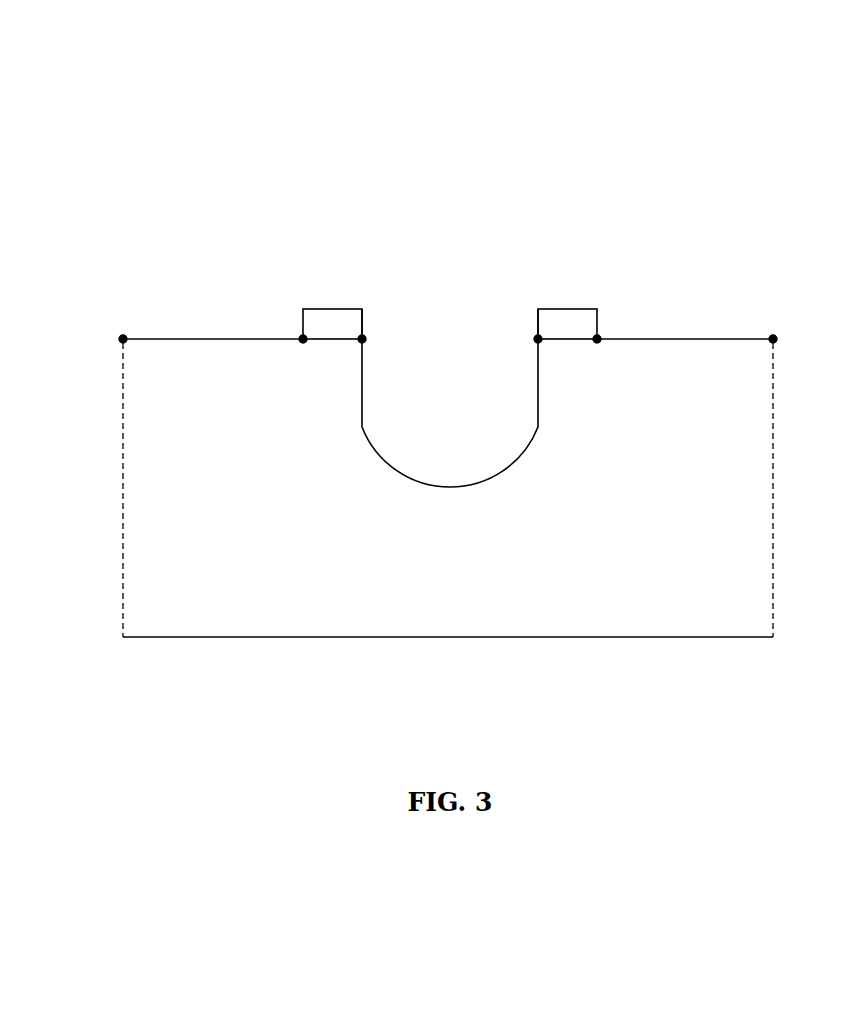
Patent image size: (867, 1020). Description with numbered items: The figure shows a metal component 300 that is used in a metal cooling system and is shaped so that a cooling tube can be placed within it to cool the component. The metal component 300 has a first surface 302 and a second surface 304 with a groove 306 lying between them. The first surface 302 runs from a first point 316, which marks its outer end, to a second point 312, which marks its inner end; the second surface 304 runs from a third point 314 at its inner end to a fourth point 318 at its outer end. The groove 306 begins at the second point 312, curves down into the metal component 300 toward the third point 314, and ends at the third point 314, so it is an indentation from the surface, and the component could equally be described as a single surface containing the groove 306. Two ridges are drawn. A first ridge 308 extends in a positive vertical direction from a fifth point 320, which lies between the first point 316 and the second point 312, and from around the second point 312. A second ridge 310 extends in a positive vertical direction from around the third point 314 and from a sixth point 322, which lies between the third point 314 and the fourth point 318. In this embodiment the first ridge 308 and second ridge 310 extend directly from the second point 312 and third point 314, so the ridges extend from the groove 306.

The metal component 300 is at (692, 110).
The first surface 302 is at (170, 339).
The second surface 304 is at (707, 339).
The groove 306 is at (451, 422).
The first ridge 308 is at (348, 309).
The second ridge 310 is at (577, 309).
The second point 312 is at (362, 327).
The third point 314 is at (538, 337).
The first point 316 is at (123, 339).
The fourth point 318 is at (773, 339).
The fifth point 320 is at (303, 339).
The sixth point 322 is at (597, 339).